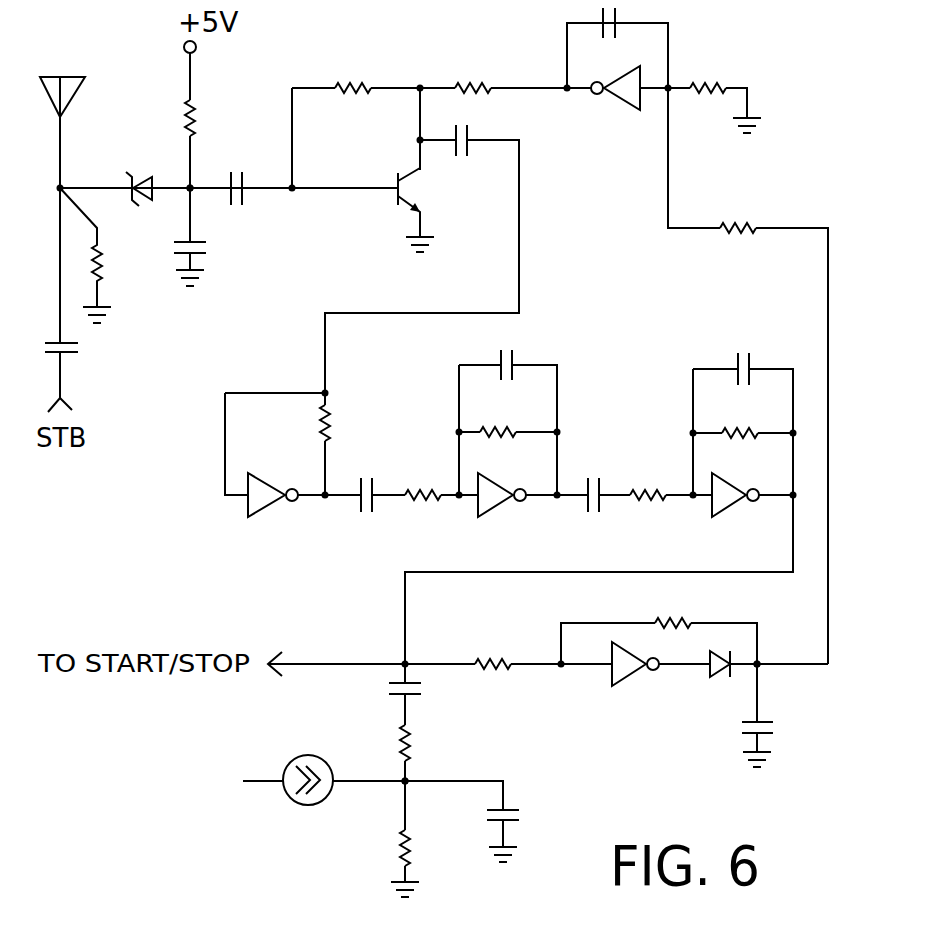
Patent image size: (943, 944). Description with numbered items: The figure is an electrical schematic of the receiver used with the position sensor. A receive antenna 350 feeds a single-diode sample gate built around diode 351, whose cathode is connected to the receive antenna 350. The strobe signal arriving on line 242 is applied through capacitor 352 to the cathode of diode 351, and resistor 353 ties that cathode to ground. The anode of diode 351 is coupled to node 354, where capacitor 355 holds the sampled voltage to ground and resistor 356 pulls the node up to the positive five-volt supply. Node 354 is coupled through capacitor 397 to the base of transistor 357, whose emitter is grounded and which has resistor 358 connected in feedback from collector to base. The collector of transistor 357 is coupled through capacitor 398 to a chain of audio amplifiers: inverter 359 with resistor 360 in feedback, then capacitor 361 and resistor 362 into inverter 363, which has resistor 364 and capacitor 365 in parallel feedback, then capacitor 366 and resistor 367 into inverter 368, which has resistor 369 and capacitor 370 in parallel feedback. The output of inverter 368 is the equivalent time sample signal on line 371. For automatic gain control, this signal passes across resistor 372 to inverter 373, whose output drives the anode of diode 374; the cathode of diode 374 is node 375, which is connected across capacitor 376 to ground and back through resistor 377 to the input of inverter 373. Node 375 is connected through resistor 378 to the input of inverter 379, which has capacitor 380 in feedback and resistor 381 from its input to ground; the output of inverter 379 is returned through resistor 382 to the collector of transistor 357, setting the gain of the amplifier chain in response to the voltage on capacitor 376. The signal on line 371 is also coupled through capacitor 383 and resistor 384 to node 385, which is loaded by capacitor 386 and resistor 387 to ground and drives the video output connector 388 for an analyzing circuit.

The line 242 is at (72, 410).
The receive antenna 350 is at (78, 98).
The diode 351 is at (140, 176).
The capacitor 352 is at (78, 350).
The resistor 353 is at (100, 282).
The node 354 is at (194, 182).
The capacitor 355 is at (205, 252).
The resistor 356 is at (197, 108).
The transistor 357 is at (395, 202).
The resistor 358 is at (357, 84).
The inverter 359 is at (264, 516).
The resistor 360 is at (332, 422).
The capacitor 361 is at (375, 504).
The resistor 362 is at (423, 490).
The inverter 363 is at (498, 510).
The resistor 364 is at (515, 420).
The capacitor 365 is at (515, 360).
The capacitor 366 is at (622, 490).
The resistor 367 is at (642, 502).
The inverter 368 is at (732, 510).
The resistor 369 is at (755, 420).
The capacitor 370 is at (752, 362).
The line 371 is at (531, 576).
The resistor 372 is at (500, 670).
The inverter 373 is at (636, 688).
The diode 374 is at (716, 678).
The node 375 is at (762, 672).
The capacitor 376 is at (742, 734).
The resistor 377 is at (672, 618).
The resistor 378 is at (732, 234).
The inverter 379 is at (624, 104).
The capacitor 380 is at (619, 18).
The resistor 381 is at (712, 84).
The resistor 382 is at (478, 84).
The capacitor 383 is at (388, 694).
The resistor 384 is at (410, 738).
The node 385 is at (400, 784).
The capacitor 386 is at (516, 814).
The resistor 387 is at (400, 868).
The video output connector 388 is at (286, 796).
The capacitor 397 is at (245, 195).
The capacitor 398 is at (462, 158).